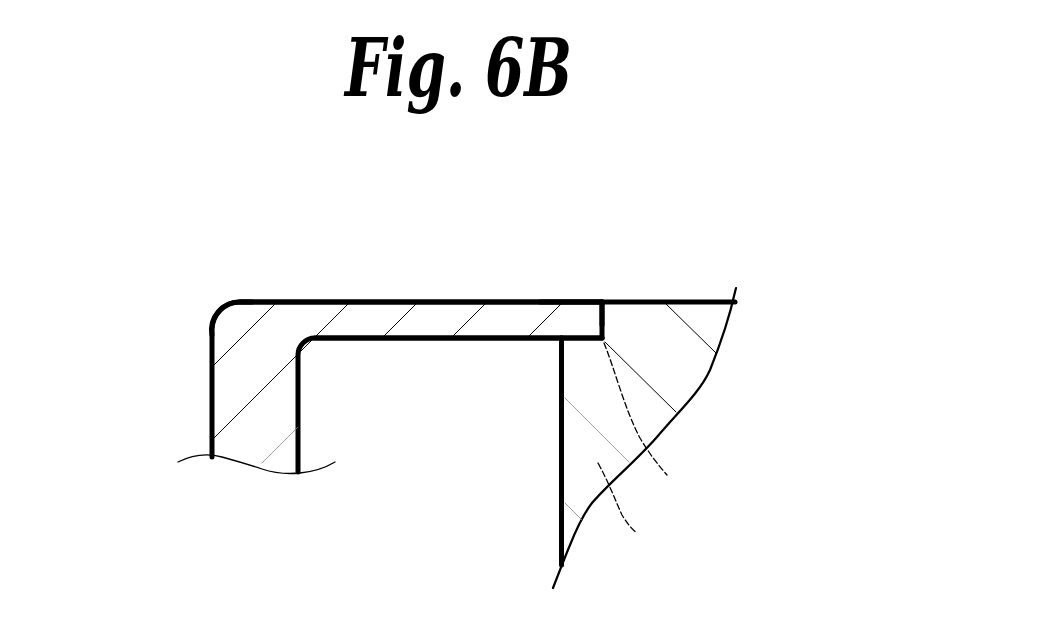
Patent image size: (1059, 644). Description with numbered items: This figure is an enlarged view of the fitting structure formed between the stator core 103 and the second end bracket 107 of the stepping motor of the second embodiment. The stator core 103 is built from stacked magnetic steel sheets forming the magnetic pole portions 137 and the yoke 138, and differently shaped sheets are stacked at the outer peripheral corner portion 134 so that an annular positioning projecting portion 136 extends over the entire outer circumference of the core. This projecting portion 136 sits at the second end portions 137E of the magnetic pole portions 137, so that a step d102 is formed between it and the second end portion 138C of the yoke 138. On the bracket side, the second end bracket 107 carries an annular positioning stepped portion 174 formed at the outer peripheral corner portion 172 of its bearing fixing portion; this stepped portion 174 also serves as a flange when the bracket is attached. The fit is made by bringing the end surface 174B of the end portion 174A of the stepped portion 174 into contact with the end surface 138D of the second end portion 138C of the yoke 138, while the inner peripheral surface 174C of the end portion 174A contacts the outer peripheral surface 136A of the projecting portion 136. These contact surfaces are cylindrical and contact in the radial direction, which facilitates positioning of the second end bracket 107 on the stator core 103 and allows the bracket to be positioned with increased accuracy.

The second end bracket 107 is at (310, 300).
The outer peripheral corner portion 172 is at (222, 308).
The annular positioning stepped portion 174 is at (437, 300).
The end portion 174A is at (562, 301).
The end surface 174B is at (631, 300).
The inner peripheral surface 174C is at (560, 367).
The yoke 138 is at (690, 300).
The second end portion 138C is at (602, 320).
The end surface 138D is at (585, 337).
The step d102 is at (582, 301).
The stator core 103 is at (727, 293).
The magnetic pole portions 137 is at (670, 369).
The annular positioning projecting portion 136 is at (565, 467).
The outer peripheral surface 136A is at (575, 338).
The outer peripheral corner portion 134 is at (660, 467).
The second end portions 137E is at (628, 526).